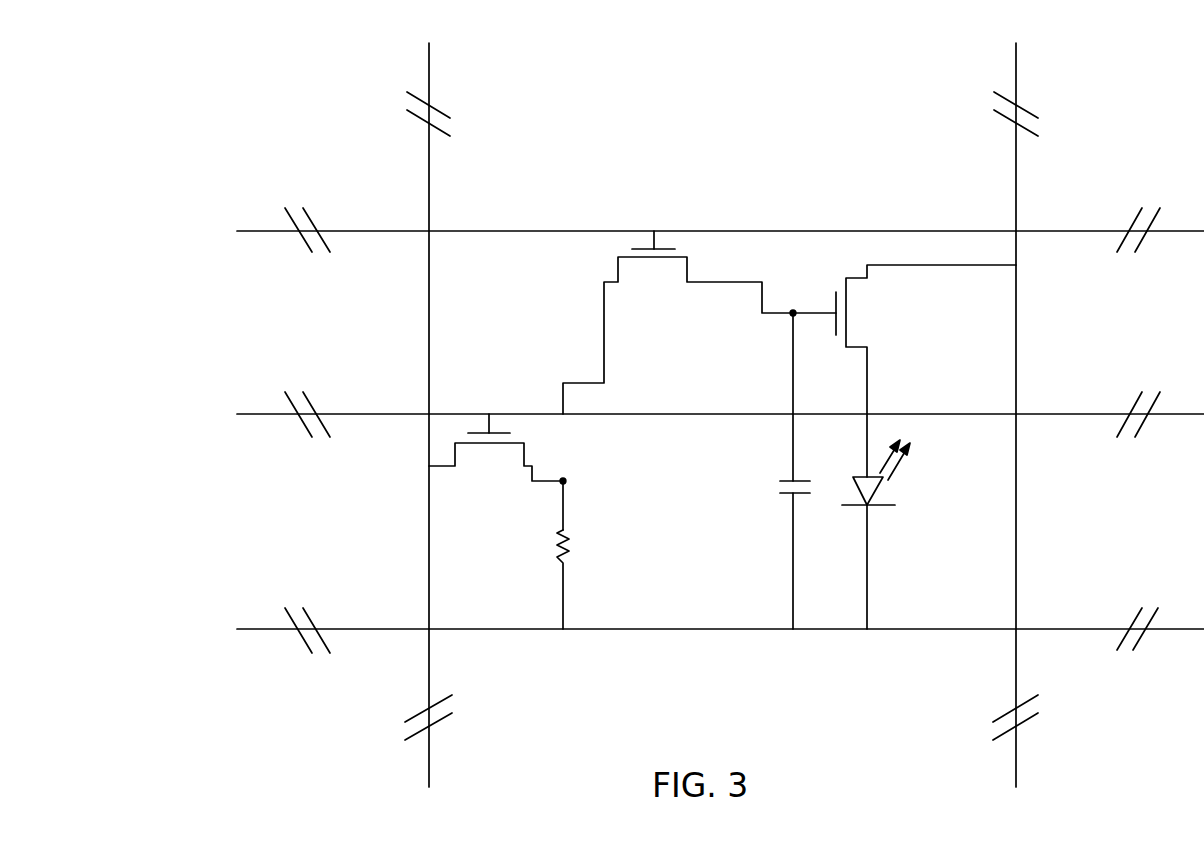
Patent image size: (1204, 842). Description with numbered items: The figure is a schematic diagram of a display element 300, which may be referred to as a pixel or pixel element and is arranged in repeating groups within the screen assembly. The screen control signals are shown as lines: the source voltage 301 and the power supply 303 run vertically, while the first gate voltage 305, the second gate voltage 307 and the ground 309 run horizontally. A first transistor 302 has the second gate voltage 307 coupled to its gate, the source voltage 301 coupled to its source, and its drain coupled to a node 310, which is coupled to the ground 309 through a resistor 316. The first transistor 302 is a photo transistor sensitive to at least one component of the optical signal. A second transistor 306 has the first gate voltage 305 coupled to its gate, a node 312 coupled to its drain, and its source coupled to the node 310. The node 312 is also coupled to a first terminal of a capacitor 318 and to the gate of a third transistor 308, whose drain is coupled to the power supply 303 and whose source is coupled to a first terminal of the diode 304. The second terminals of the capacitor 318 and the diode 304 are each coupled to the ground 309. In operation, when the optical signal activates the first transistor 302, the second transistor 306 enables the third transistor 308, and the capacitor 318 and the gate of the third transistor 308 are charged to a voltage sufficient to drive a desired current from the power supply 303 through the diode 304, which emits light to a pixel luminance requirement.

The display element 300 is at (220, 117).
The source voltage (Vs) 301 is at (429, 70).
The first transistor T1 302 is at (490, 476).
The power supply (Vdd) 303 is at (1016, 73).
The diode 304 is at (917, 509).
The first gate voltage (VG1) 305 is at (248, 229).
The second transistor T2 306 is at (653, 289).
The second gate voltage (VG2) 307 is at (248, 412).
The third transistor T3 308 is at (879, 312).
The ground (GND) 309 is at (248, 627).
The node 310 is at (565, 481).
The node 312 is at (793, 311).
The resistor Rs 316 is at (598, 552).
The capacitor Cs 318 is at (750, 488).